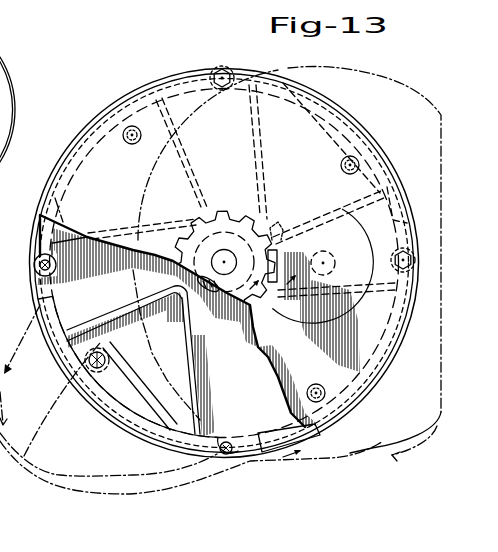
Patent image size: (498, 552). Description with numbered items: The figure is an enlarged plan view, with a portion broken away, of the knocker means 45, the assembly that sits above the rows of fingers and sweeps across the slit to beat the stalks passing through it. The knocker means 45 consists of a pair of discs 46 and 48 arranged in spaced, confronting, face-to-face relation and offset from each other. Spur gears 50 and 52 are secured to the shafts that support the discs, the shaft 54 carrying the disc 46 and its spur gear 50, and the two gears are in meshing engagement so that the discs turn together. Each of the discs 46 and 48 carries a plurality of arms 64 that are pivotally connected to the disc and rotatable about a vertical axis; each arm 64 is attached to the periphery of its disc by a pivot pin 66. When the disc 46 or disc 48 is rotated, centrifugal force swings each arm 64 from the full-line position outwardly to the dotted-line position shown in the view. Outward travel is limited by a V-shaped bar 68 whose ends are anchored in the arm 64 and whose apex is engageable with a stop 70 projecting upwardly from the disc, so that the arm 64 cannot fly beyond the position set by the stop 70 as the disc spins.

The knocker means 45 is at (287, 469).
The disc 46 is at (124, 104).
The disc 48 is at (382, 68).
The spur gear 50 is at (232, 214).
The spur gear 52 is at (320, 210).
The shaft 54 is at (236, 261).
The arm 64 is at (57, 348).
The pivot pin 66 is at (230, 458).
The V-shaped bar 68 is at (97, 326).
The stop 70 is at (101, 368).